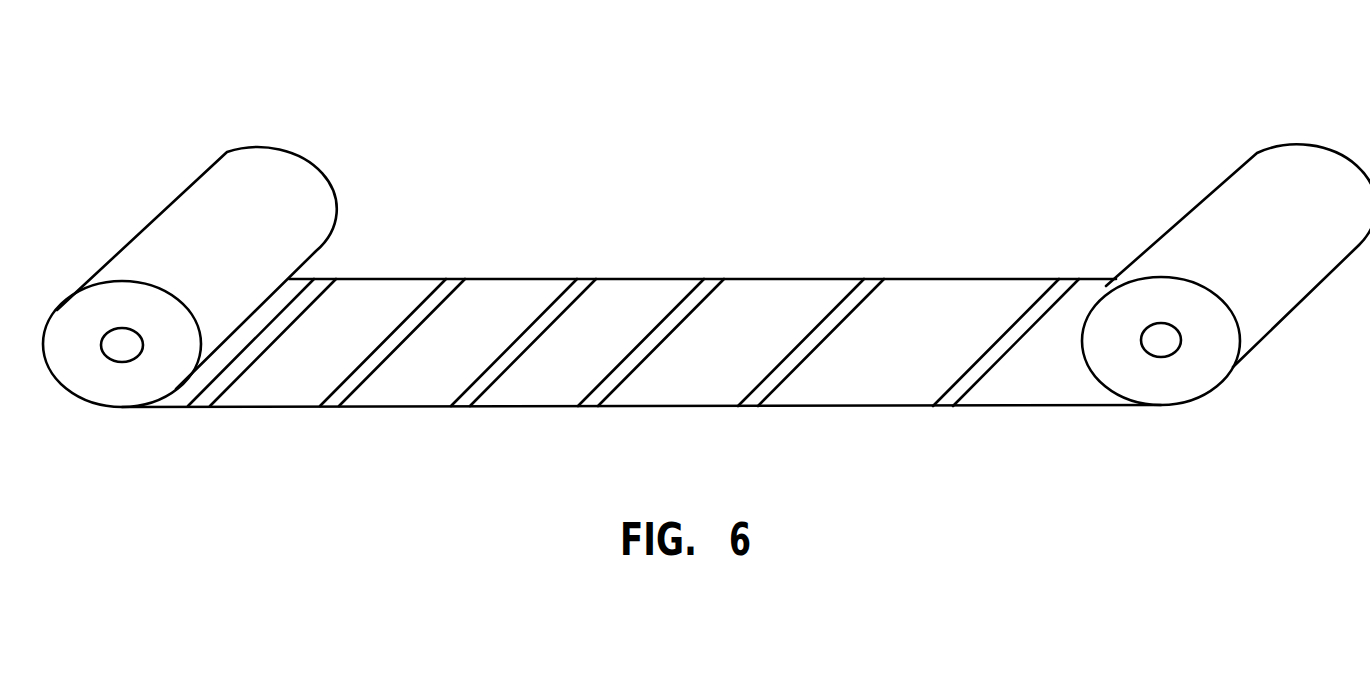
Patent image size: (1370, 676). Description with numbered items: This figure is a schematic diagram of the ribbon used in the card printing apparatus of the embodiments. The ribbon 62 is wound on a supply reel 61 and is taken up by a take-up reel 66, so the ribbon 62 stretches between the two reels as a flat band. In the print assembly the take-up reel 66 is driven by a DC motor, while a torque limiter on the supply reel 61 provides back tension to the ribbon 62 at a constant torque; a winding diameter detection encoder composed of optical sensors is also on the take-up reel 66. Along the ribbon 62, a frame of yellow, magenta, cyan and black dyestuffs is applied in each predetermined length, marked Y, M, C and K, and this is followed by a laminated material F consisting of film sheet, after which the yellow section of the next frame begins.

The supply reel 61 is at (1315, 144).
The ribbon 62 is at (525, 278).
The take-up reel 66 is at (291, 150).